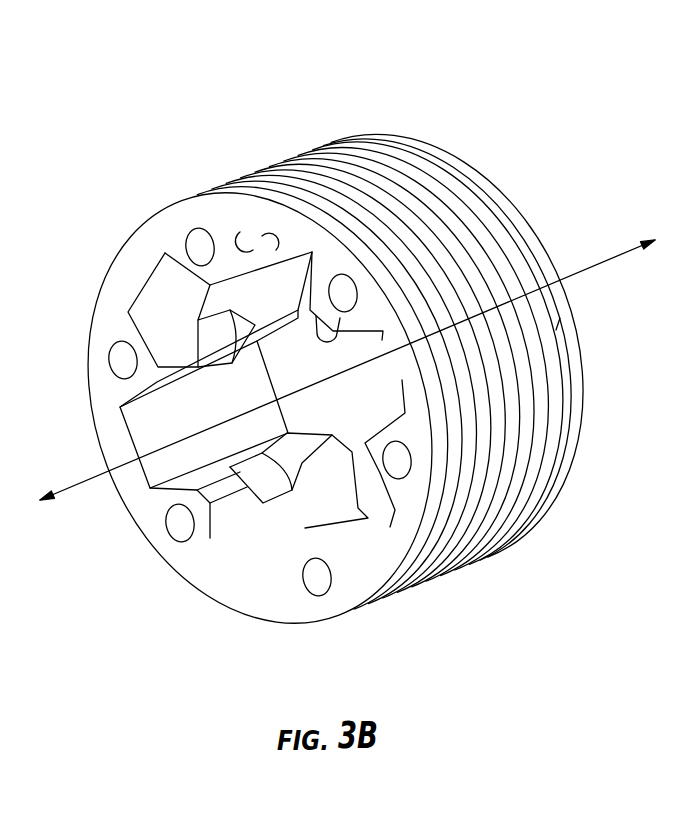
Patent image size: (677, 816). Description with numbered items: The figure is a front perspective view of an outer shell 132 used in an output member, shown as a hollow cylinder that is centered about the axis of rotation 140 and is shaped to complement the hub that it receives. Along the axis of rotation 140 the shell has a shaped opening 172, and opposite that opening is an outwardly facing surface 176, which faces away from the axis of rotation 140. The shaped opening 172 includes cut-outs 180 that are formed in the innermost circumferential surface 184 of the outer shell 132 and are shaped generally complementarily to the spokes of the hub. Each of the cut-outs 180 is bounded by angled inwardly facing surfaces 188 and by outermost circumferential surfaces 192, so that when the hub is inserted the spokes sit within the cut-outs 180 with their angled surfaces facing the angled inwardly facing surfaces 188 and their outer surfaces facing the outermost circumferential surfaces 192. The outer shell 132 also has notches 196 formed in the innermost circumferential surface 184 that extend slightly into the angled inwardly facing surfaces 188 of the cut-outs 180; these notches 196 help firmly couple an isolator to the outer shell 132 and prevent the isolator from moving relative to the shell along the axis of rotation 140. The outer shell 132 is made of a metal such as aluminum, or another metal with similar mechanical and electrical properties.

The outer shell 132 is at (474, 90).
The axis of rotation 140 is at (66, 494).
The shaped opening 172 is at (243, 525).
The outwardly facing surface 176 is at (490, 495).
The cut-outs 180 is at (553, 325).
The innermost circumferential surface 184 is at (333, 331).
The angled inwardly facing surfaces 188 is at (297, 253).
The outermost circumferential surfaces 192 is at (270, 242).
The notches 196 is at (212, 325).